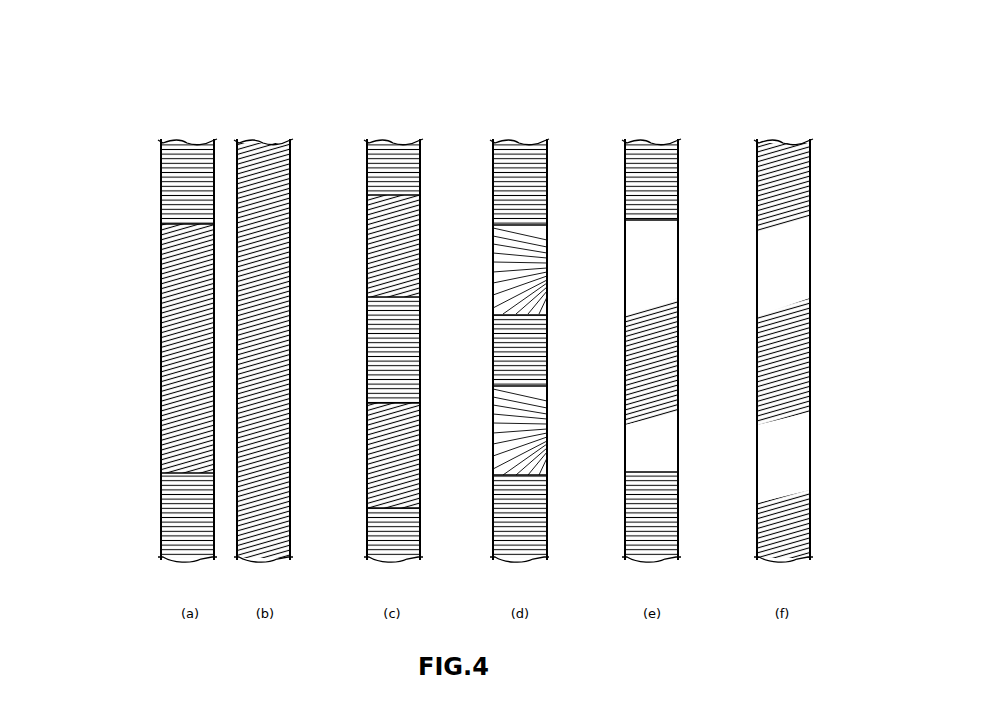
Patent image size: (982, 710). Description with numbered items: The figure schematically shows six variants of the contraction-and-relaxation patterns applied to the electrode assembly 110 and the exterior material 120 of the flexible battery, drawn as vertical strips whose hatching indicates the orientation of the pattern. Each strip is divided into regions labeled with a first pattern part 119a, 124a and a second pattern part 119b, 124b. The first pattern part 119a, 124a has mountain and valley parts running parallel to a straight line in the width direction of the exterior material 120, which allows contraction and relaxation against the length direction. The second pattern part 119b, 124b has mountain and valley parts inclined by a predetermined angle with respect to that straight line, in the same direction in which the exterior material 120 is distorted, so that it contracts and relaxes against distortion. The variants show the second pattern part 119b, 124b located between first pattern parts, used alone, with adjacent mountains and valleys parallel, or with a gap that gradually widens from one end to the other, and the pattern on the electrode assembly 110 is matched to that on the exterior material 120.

The electrode assembly 110 is at (442, 295).
The exterior material 120 is at (435, 308).
The first pattern part 119a is at (152, 142).
The first pattern part 124a is at (152, 222).
The second pattern part 119b is at (152, 226).
The second pattern part 124b is at (152, 471).